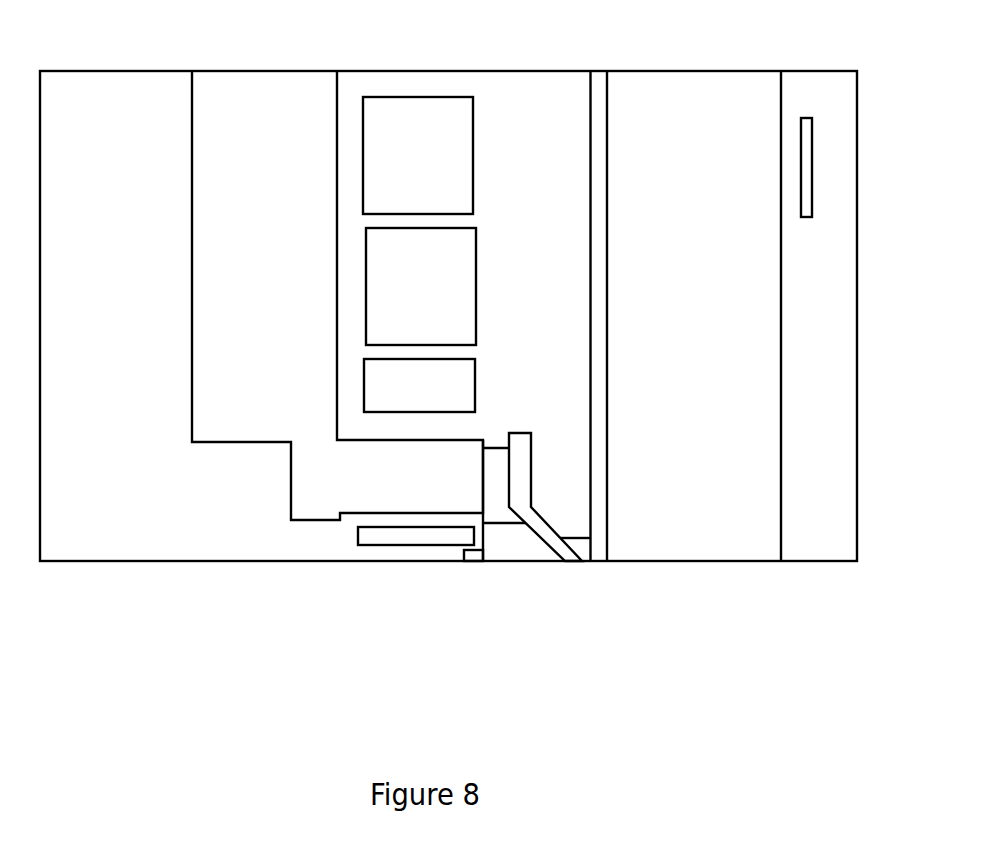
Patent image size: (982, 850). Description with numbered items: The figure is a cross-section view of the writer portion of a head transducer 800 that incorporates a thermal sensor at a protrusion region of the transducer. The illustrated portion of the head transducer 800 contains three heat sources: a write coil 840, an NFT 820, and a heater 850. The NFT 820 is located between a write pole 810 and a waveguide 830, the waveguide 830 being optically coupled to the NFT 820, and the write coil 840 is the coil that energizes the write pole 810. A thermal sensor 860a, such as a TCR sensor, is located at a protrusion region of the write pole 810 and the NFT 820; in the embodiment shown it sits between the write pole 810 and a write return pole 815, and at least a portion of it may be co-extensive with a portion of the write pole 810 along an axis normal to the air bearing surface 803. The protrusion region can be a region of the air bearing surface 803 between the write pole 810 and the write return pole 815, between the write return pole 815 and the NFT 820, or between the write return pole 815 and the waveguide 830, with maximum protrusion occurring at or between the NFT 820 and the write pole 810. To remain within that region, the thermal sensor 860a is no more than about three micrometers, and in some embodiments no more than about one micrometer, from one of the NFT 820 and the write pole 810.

The head transducer 800 is at (732, 70).
The air bearing surface 803 is at (365, 561).
The write pole 810 is at (533, 522).
The write return pole 815 is at (302, 473).
The NFT 820 is at (583, 553).
The waveguide 830 is at (598, 553).
The write coil 840 is at (468, 284).
The heater 850 is at (807, 217).
The thermal sensor 860a is at (473, 556).